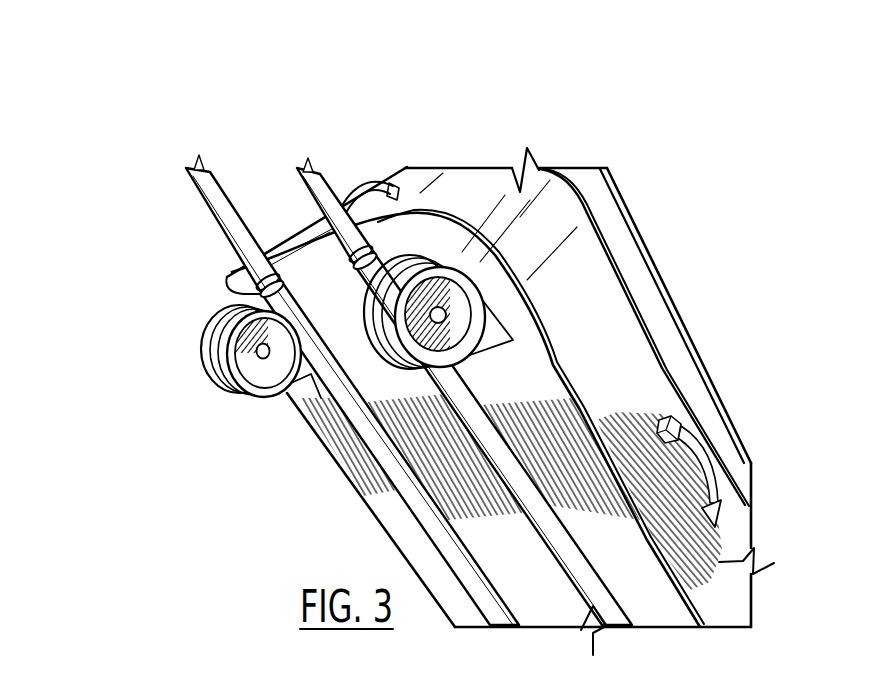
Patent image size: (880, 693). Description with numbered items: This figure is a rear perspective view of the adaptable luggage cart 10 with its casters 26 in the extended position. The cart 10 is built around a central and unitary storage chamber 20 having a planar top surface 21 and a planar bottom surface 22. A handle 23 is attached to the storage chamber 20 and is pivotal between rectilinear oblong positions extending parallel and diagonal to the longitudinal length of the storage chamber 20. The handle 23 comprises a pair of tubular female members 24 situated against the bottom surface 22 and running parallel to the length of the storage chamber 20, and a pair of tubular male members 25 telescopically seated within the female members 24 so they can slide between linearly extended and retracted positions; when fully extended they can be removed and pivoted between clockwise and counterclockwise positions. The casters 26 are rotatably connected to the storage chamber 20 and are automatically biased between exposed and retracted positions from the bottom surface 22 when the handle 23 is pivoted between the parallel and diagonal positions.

The luggage cart 10 is at (397, 341).
The storage chamber 20 is at (620, 249).
The top surface 21 is at (670, 307).
The bottom surface 22 is at (376, 487).
The handle 23 is at (335, 380).
The tubular female members 24 is at (488, 595).
The tubular male members 25 is at (213, 193).
The casters 26 is at (435, 275).